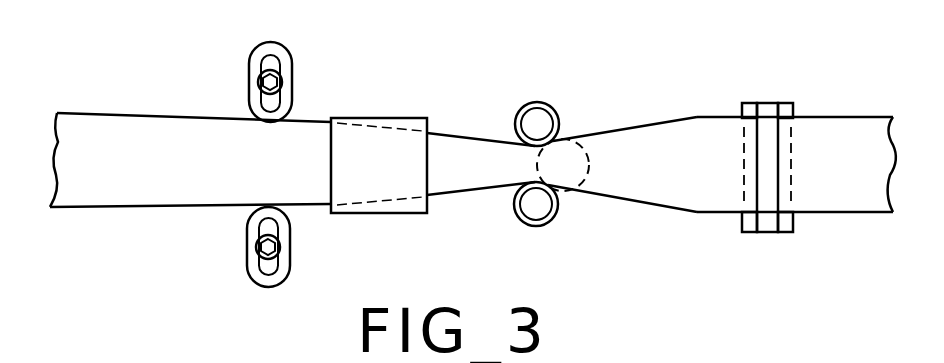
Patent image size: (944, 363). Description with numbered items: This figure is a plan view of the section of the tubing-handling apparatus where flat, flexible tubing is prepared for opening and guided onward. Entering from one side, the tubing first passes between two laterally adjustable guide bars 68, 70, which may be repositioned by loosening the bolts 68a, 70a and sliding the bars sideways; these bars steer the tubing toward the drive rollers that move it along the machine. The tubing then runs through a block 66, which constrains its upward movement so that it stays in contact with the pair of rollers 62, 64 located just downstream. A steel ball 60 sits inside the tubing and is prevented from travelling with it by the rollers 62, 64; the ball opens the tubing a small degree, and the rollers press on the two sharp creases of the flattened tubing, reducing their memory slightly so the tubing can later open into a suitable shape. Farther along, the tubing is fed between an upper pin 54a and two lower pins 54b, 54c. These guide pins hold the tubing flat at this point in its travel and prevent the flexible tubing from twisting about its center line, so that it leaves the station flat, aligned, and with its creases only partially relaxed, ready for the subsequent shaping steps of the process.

The upper pin 54a is at (768, 103).
The lower pin 54b is at (752, 226).
The lower pin 54c is at (785, 224).
The steel ball 60 is at (586, 150).
The roller 62 is at (548, 222).
The roller 64 is at (546, 103).
The block 66 is at (386, 120).
The guide bar 68 is at (224, 268).
The bolt 68a is at (256, 247).
The guide bar 70 is at (226, 61).
The bolt 70a is at (261, 74).